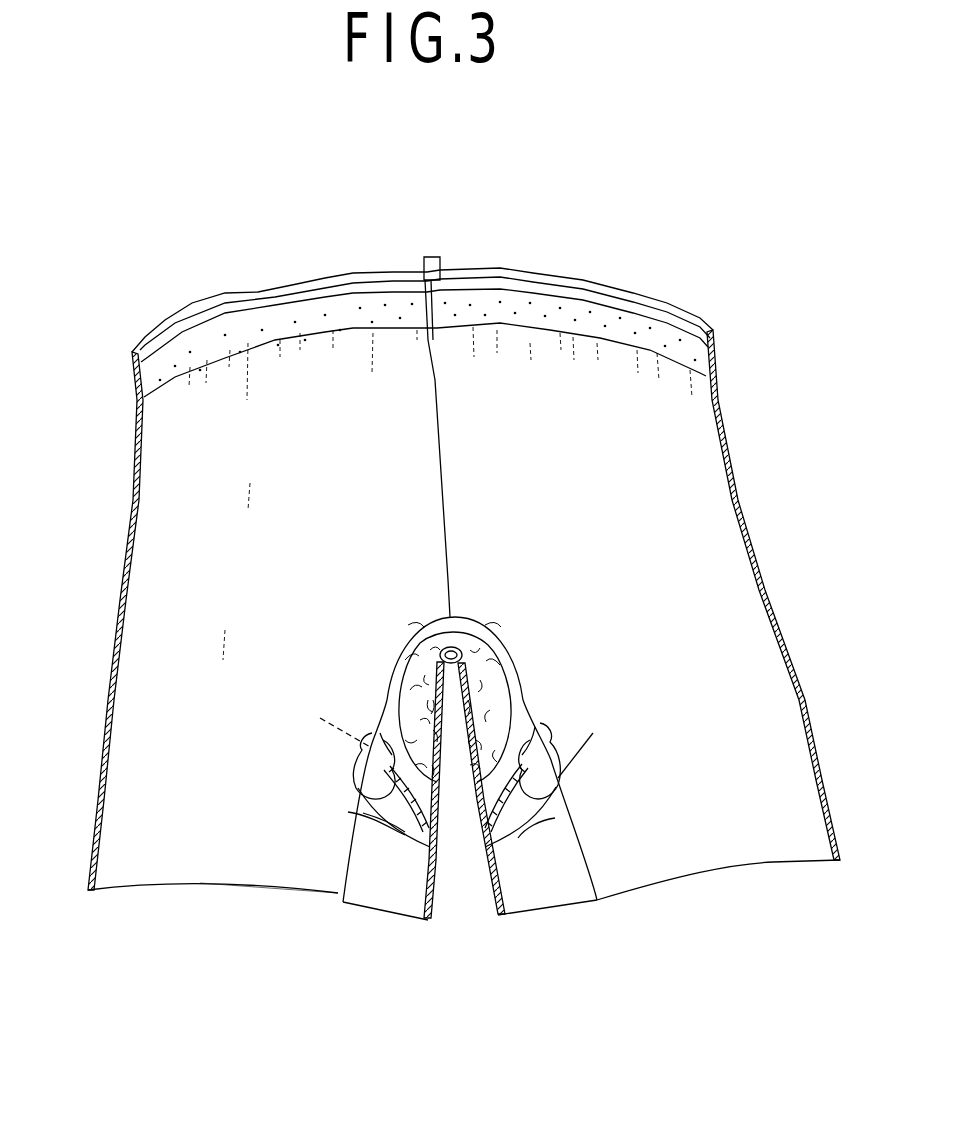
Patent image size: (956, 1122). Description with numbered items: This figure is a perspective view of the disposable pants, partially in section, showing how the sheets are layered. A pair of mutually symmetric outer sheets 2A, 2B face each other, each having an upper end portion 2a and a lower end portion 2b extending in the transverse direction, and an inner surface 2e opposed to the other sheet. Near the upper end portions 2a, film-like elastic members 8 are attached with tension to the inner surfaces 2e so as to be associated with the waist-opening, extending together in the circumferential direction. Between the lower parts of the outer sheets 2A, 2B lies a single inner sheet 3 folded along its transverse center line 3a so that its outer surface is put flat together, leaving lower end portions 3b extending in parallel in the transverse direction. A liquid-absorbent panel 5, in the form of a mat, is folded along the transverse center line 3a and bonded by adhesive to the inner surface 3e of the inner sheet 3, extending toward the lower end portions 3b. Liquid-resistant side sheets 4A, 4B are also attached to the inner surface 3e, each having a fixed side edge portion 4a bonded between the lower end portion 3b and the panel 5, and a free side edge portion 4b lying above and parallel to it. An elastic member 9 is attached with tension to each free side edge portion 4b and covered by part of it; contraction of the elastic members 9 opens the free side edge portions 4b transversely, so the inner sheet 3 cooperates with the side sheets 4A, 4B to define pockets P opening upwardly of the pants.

The outer sheet 2A is at (140, 608).
The outer sheet 2B is at (745, 592).
The upper end portion 2a is at (333, 278).
The lower end portion 2b is at (185, 887).
The inner surface 2e is at (265, 865).
The elastic member 8 is at (258, 318).
The inner sheet 3 is at (510, 883).
The transverse center line 3a is at (427, 643).
The lower end portion 3b is at (363, 880).
The inner surface 3e is at (355, 900).
The side sheet 4A is at (363, 790).
The side sheet 4B is at (560, 790).
The fixed side edge portion 4a is at (363, 813).
The free side edge portion 4b is at (380, 733).
The liquid-absorbent panel 5 is at (493, 640).
The elastic member 9 is at (454, 740).
The pocket P is at (443, 805).